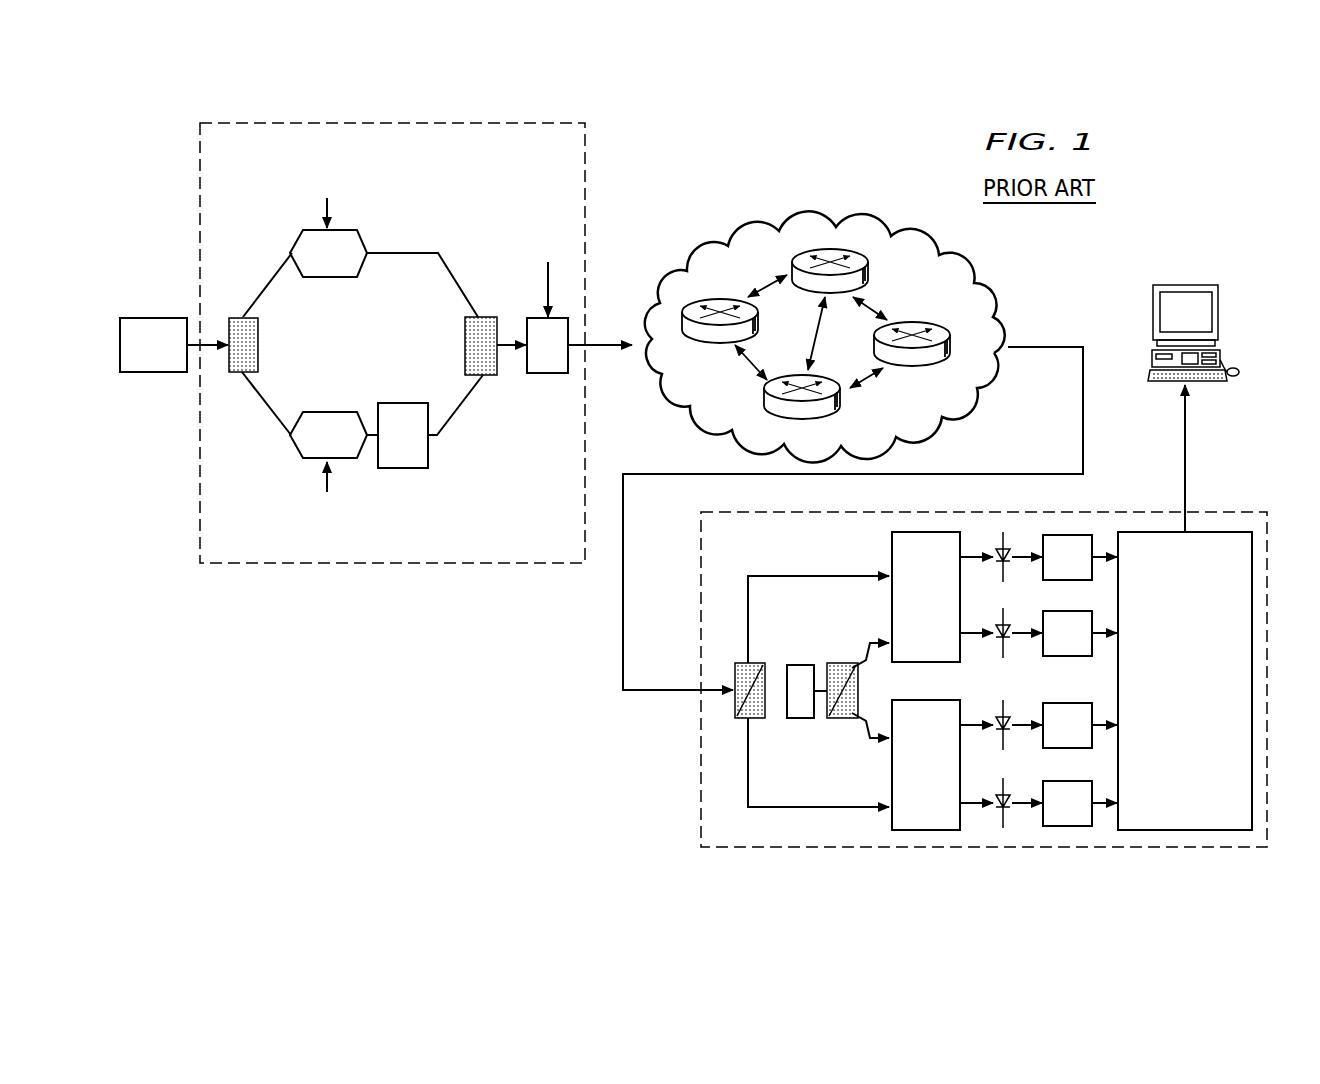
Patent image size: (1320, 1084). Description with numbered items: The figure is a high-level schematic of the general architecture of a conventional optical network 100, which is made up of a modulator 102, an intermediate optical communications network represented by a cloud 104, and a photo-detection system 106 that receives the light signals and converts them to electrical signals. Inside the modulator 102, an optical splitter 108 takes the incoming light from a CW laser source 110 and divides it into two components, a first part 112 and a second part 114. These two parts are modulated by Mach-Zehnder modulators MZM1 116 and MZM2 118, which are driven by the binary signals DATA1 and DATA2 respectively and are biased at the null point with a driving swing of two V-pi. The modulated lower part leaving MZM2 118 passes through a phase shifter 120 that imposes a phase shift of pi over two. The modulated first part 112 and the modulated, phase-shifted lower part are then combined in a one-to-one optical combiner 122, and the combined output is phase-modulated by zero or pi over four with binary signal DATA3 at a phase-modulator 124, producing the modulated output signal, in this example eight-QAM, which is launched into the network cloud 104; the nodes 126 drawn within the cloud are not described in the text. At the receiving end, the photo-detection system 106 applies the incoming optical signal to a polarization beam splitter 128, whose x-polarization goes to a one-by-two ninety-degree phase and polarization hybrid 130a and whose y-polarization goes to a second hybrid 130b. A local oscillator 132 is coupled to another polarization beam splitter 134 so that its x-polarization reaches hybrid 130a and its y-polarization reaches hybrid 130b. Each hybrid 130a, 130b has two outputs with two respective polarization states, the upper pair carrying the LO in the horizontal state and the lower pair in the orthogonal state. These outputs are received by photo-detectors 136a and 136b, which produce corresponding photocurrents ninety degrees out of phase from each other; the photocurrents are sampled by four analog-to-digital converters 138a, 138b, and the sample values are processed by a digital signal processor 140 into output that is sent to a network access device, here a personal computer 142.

The optical network 100 is at (388, 670).
The modulator 102 is at (330, 563).
The cloud 104 is at (828, 205).
The photo-detection system 106 is at (1137, 512).
The optical splitter 108 is at (230, 317).
The CW laser source 110 is at (157, 316).
The first part 112 is at (266, 288).
The second part 114 is at (264, 408).
The Mach-Zehnder Modulator MZM1 116 is at (295, 240).
The Mach-Zehnder Modulator MZM2 118 is at (290, 447).
The phase shifter 120 is at (404, 403).
The 1:1 optical combiner 122 is at (463, 320).
The phase-modulator 124 is at (528, 318).
The network node / router 126 is at (792, 268).
The polarization beam splitter 128 is at (735, 718).
The 1×2 90° phase and polarization hybrid 130a is at (927, 532).
The 1×2 90° phase and polarization hybrid 130b is at (925, 831).
The Local Oscillator 132 is at (797, 718).
The polarization beam splitter 134 is at (830, 662).
The photo-detectors 136a is at (1005, 532).
The photo-detectors 136b is at (1005, 830).
The analog-to-digital converters 138a is at (1068, 535).
The analog-to-digital converters 138b is at (1068, 826).
The digital signal processor 140 is at (1240, 530).
The personal computer 142 is at (1188, 284).